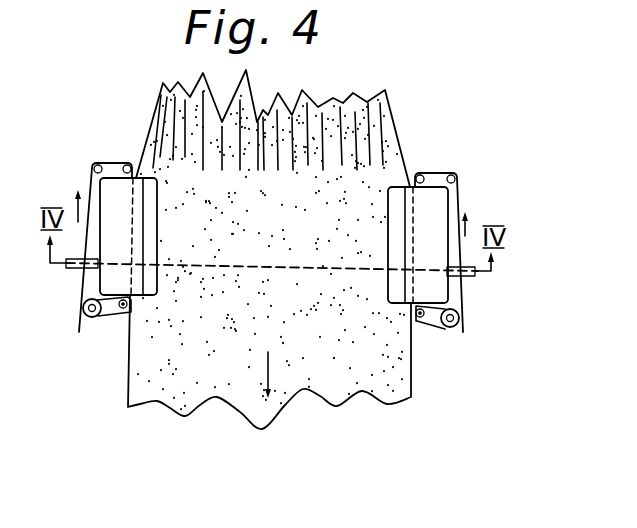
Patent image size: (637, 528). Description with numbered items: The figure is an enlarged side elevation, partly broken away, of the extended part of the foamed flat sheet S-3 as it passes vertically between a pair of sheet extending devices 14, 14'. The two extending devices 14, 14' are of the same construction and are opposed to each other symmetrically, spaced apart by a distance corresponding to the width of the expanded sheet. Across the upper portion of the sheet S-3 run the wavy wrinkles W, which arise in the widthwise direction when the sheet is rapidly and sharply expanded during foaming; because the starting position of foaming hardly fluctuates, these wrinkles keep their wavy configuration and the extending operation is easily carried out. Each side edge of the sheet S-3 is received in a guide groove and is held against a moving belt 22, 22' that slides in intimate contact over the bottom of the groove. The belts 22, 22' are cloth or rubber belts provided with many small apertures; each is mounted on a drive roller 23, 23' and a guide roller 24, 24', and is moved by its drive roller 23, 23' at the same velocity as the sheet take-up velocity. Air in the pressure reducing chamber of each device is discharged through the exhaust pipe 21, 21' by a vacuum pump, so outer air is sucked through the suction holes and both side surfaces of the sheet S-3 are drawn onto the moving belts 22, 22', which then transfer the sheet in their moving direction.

The wavy wrinkles W is at (312, 118).
The foamed flat sheet S-3 is at (303, 189).
The sheet extending device 14 is at (103, 211).
The guide roller 24 is at (128, 203).
The moving belt 22 is at (77, 247).
The exhaust pipe 21 is at (64, 284).
The drive roller 23 is at (93, 336).
The sheet extending device 14' is at (441, 216).
The guide roller 24' is at (423, 216).
The moving belt 22' is at (472, 252).
The exhaust pipe 21' is at (496, 287).
The drive roller 23' is at (462, 334).